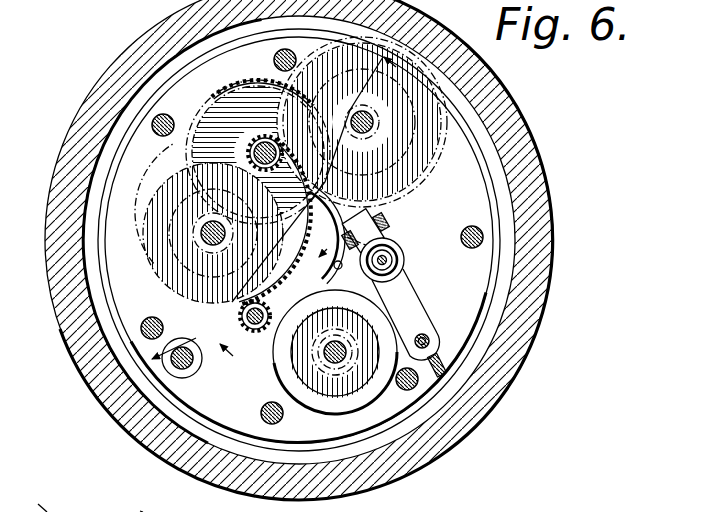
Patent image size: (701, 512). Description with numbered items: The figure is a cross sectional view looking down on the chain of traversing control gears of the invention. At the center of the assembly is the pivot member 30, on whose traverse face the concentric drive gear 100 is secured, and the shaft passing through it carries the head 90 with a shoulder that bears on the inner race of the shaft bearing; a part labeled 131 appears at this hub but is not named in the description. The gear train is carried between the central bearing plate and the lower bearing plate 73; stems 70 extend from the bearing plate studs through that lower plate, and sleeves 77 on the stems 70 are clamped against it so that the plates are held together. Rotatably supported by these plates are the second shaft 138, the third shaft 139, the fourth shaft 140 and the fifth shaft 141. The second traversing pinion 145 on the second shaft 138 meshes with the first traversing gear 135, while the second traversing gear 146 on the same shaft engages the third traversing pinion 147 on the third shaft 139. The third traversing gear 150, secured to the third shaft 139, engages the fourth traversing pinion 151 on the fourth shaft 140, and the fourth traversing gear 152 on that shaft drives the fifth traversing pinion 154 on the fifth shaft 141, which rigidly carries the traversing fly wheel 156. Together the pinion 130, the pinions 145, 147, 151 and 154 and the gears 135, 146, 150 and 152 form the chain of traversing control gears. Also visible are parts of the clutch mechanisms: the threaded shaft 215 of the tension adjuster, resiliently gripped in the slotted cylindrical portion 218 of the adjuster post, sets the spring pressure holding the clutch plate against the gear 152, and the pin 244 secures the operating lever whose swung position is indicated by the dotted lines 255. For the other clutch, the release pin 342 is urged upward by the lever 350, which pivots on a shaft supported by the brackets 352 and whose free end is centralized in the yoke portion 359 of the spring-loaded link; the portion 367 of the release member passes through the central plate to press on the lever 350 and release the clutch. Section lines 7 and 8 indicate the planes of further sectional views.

The section line 7- 7 is at (316, 218).
The section line 8- 8 is at (169, 365).
The pivot member 30 is at (518, 132).
The stems 70 is at (492, 243).
The lower bearing plate 73 is at (473, 288).
The sleeves 77 is at (227, 0).
The head 90 is at (331, 241).
The concentric drive gear 100 is at (374, 130).
The pinion 130 is at (441, 143).
The barrel arbor 131 is at (359, 112).
The first traversing gear 135 is at (412, 163).
The second shaft 138 is at (265, 141).
The third shaft 139 is at (207, 224).
The fourth shaft 140 is at (253, 331).
The fifth shaft 141 is at (331, 363).
The second traversing pinion 145 is at (250, 146).
The second traversing gear 146 is at (239, 83).
The third traversing pinion 147 is at (210, 222).
The third traversing gear 150 is at (157, 257).
The fourth traversing pinion 151 is at (215, 302).
The fourth traversing gear 152 is at (246, 330).
The fifth traversing pinion 154 is at (369, 395).
The traversing fly wheel 156 is at (364, 393).
The threaded shaft 215 is at (176, 372).
The cylindrical portion 218 is at (166, 351).
The pin 244 is at (124, 503).
The dotted lines 255 is at (25, 498).
The release pin 342 is at (400, 260).
The lever 350 is at (400, 291).
The brackets 352 is at (390, 220).
The yoke portion 359 is at (448, 368).
The portion 367 is at (430, 343).